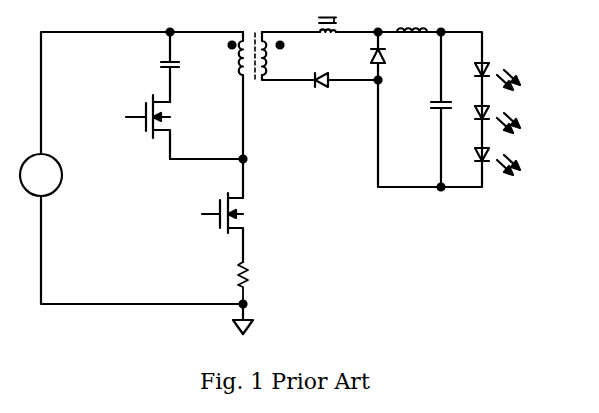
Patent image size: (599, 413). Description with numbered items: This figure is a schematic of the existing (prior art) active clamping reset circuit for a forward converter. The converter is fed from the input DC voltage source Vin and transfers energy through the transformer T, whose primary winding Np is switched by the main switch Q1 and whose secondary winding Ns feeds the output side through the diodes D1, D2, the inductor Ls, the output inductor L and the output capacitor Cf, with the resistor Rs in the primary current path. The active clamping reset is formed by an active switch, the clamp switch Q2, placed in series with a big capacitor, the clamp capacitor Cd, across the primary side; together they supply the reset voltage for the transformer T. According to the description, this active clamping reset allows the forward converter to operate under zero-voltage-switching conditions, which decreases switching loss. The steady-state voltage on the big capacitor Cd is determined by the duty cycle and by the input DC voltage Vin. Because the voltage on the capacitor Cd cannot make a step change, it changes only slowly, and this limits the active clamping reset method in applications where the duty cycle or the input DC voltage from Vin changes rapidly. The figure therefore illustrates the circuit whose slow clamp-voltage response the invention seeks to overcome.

The input voltage source Vin is at (41, 175).
The clamp capacitor Cd is at (160, 67).
The clamp switch transistor Q2 is at (161, 127).
The transformer T is at (254, 44).
The primary winding Np is at (227, 53).
The secondary winding Ns is at (279, 53).
The secondary inductor Ls is at (315, 21).
The first diode D1 is at (326, 70).
The second diode D2 is at (391, 56).
The output inductor L is at (409, 18).
The output filter capacitor Cf is at (434, 109).
The main switch transistor Q1 is at (235, 227).
The sense resistor Rs is at (231, 283).